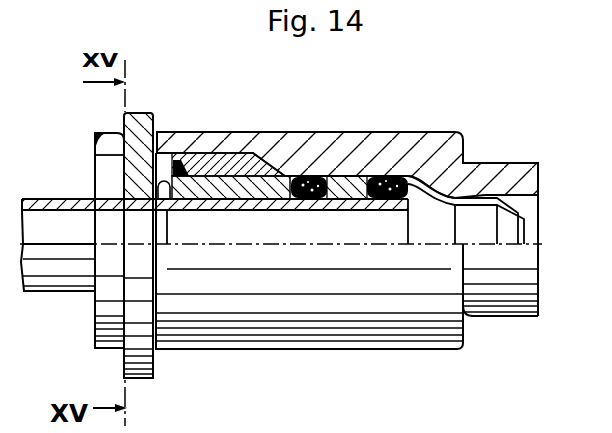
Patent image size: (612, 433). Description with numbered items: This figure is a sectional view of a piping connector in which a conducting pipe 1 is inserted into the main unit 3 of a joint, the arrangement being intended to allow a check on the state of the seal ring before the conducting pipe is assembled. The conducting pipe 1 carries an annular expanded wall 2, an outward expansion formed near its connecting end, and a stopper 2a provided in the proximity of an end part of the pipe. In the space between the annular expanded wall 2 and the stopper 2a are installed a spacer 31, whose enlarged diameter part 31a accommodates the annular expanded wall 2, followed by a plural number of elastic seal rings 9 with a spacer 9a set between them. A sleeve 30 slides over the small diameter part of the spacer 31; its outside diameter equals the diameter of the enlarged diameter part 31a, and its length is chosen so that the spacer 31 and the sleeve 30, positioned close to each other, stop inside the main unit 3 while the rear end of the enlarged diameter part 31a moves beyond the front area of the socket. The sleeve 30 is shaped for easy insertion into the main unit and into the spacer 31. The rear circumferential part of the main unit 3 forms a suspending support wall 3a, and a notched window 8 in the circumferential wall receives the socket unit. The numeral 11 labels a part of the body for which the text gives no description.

The conducting pipe 1 is at (34, 198).
The annular expanded wall 2 is at (200, 151).
The stopper 2a is at (425, 177).
The main unit of joint 3 is at (516, 163).
The suspending support wall 3a is at (97, 134).
The notched window 8 is at (157, 142).
The elastic seal ring member 9 is at (318, 180).
The spacer 9a is at (357, 180).
The cylindrical body 11 is at (157, 283).
The sleeve 30 is at (264, 180).
The spacer 31 is at (228, 168).
The enlarged diameter part 31a is at (176, 160).